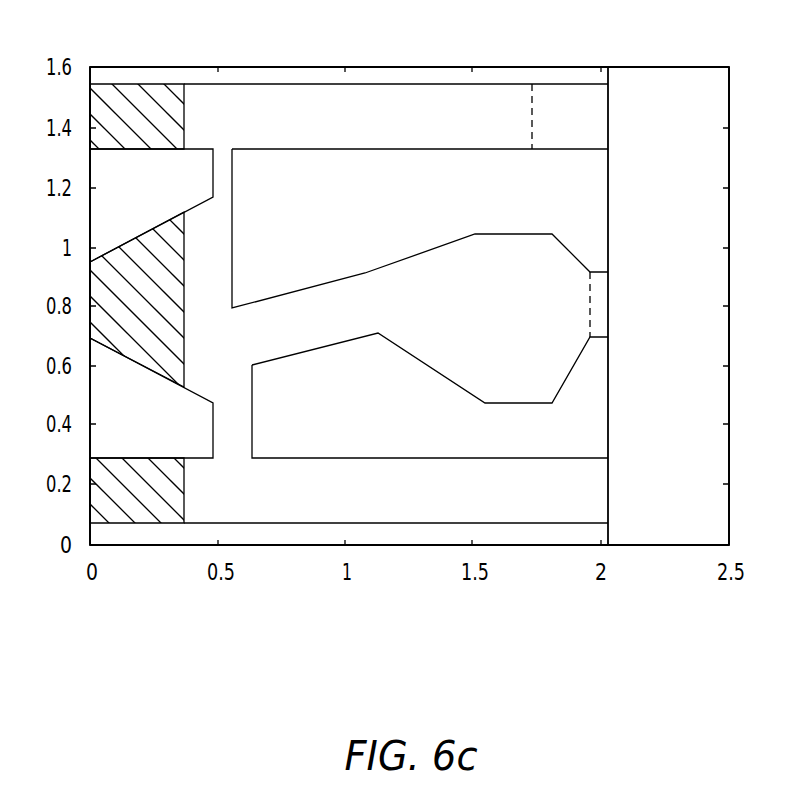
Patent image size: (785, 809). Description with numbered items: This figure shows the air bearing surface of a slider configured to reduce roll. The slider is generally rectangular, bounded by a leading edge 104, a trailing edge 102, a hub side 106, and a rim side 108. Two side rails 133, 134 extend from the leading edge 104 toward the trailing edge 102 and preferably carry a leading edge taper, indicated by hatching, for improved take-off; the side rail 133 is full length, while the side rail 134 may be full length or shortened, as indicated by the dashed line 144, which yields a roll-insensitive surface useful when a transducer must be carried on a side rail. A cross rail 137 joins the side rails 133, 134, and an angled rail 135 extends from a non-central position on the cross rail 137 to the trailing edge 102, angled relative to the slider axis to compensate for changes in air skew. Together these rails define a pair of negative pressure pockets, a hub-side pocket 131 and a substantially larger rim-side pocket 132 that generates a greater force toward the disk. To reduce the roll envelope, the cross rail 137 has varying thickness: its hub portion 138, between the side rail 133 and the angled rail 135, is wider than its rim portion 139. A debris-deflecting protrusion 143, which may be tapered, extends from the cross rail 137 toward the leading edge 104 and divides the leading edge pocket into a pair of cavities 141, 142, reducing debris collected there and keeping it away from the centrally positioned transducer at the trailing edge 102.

The trailing edge 102 is at (608, 300).
The leading edge 104 is at (90, 283).
The hub side 106 is at (430, 546).
The rim side 108 is at (437, 67).
The hub-side negative pressure pocket 131 is at (348, 403).
The rim-side negative pressure pocket 132 is at (338, 246).
The side rail 133 is at (306, 494).
The side rail 134 is at (283, 139).
The angled rail 135 is at (483, 330).
The cross rail 137 is at (205, 354).
The hub portion 138 is at (244, 433).
The rim portion 139 is at (230, 179).
The cavity 141 is at (159, 434).
The cavity 142 is at (127, 199).
The debris-deflecting protrusion 143 is at (159, 313).
The dashed line 144 is at (532, 125).